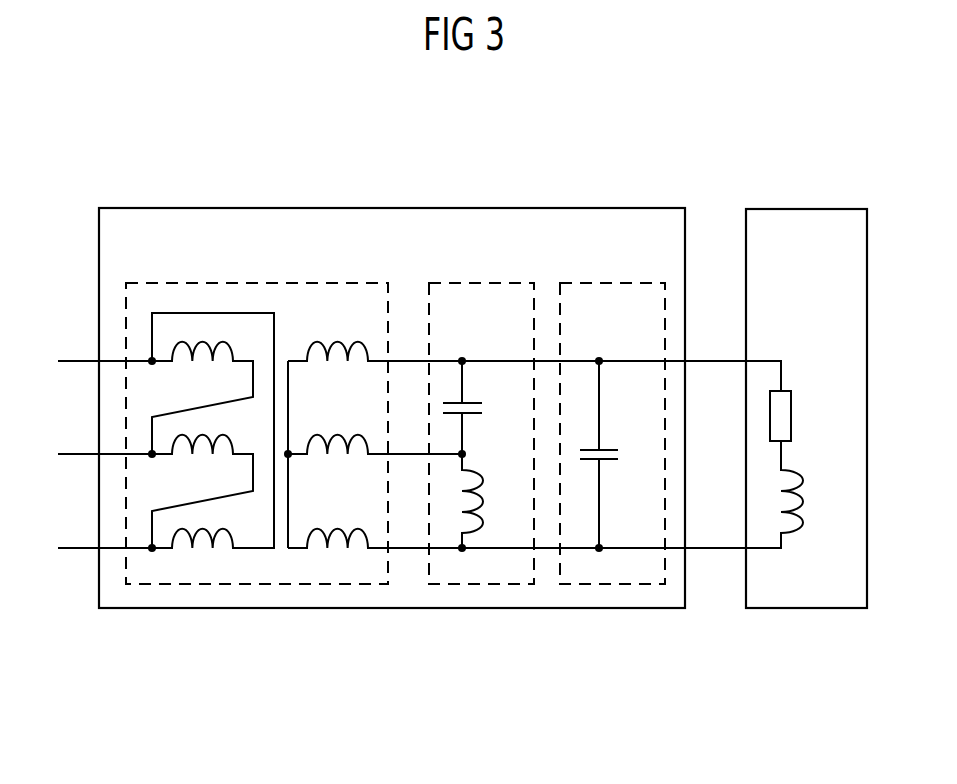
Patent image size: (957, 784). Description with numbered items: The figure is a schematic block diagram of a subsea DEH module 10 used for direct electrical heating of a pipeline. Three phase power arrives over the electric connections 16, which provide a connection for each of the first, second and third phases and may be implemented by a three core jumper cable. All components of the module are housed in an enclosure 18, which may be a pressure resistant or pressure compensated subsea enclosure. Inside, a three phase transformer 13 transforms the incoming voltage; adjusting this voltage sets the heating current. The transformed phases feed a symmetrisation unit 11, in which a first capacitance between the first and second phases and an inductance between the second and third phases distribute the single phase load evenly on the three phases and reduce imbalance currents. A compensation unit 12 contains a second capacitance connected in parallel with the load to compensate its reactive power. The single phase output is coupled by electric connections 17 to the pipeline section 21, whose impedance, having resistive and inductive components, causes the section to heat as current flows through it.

The subsea DEH module 10 is at (557, 621).
The symmetrisation unit 11 is at (479, 283).
The compensation unit 12 is at (607, 283).
The three phase transformer 13 is at (242, 283).
The electric connections 16 is at (62, 278).
The electric connections 17 is at (713, 232).
The enclosure 18 is at (398, 208).
The pipeline section 21 is at (803, 209).